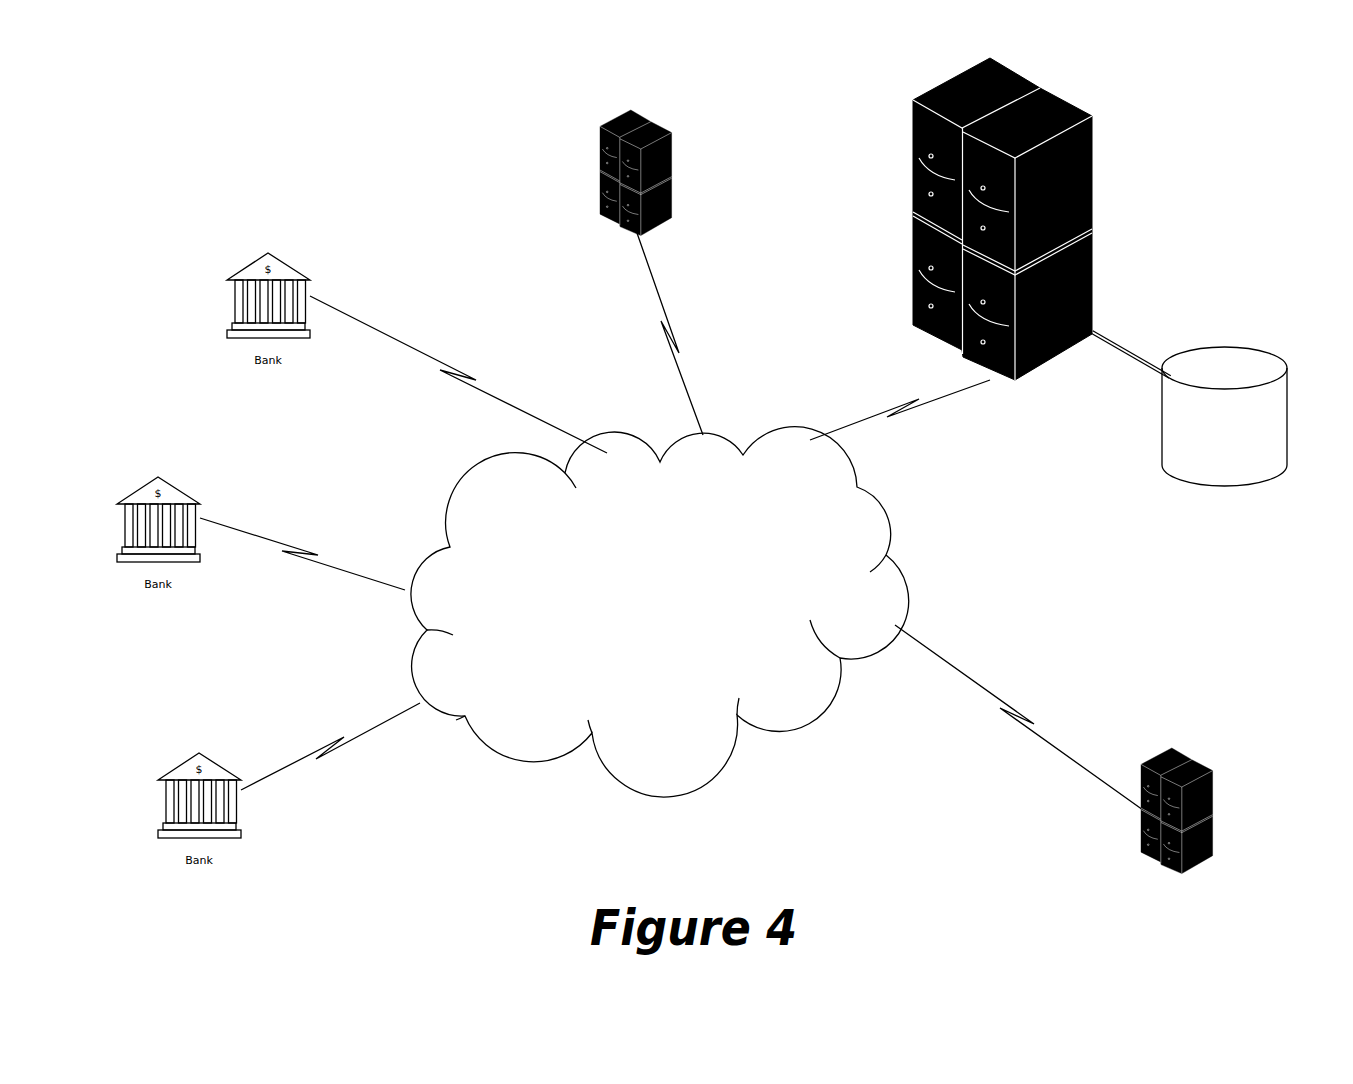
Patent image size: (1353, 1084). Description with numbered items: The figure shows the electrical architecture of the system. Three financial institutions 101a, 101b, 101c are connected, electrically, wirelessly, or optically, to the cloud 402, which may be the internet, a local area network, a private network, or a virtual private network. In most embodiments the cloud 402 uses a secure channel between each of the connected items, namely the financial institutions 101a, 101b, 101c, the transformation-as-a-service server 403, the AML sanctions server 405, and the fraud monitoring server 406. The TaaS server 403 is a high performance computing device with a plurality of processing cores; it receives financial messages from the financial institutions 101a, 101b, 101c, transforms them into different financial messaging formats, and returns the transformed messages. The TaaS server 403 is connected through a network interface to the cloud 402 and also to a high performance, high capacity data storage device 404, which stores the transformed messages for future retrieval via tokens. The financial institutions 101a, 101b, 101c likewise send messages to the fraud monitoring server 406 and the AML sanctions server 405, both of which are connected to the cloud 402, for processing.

The financial institution 101a is at (268, 324).
The financial institution 101b is at (158, 548).
The financial institution 101c is at (199, 824).
The cloud 402 is at (669, 614).
The transformation-as-a-service server 403 is at (1040, 87).
The data storage device 404 is at (1242, 428).
The AML sanctions server 405 is at (1190, 757).
The fraud monitoring server 406 is at (650, 118).